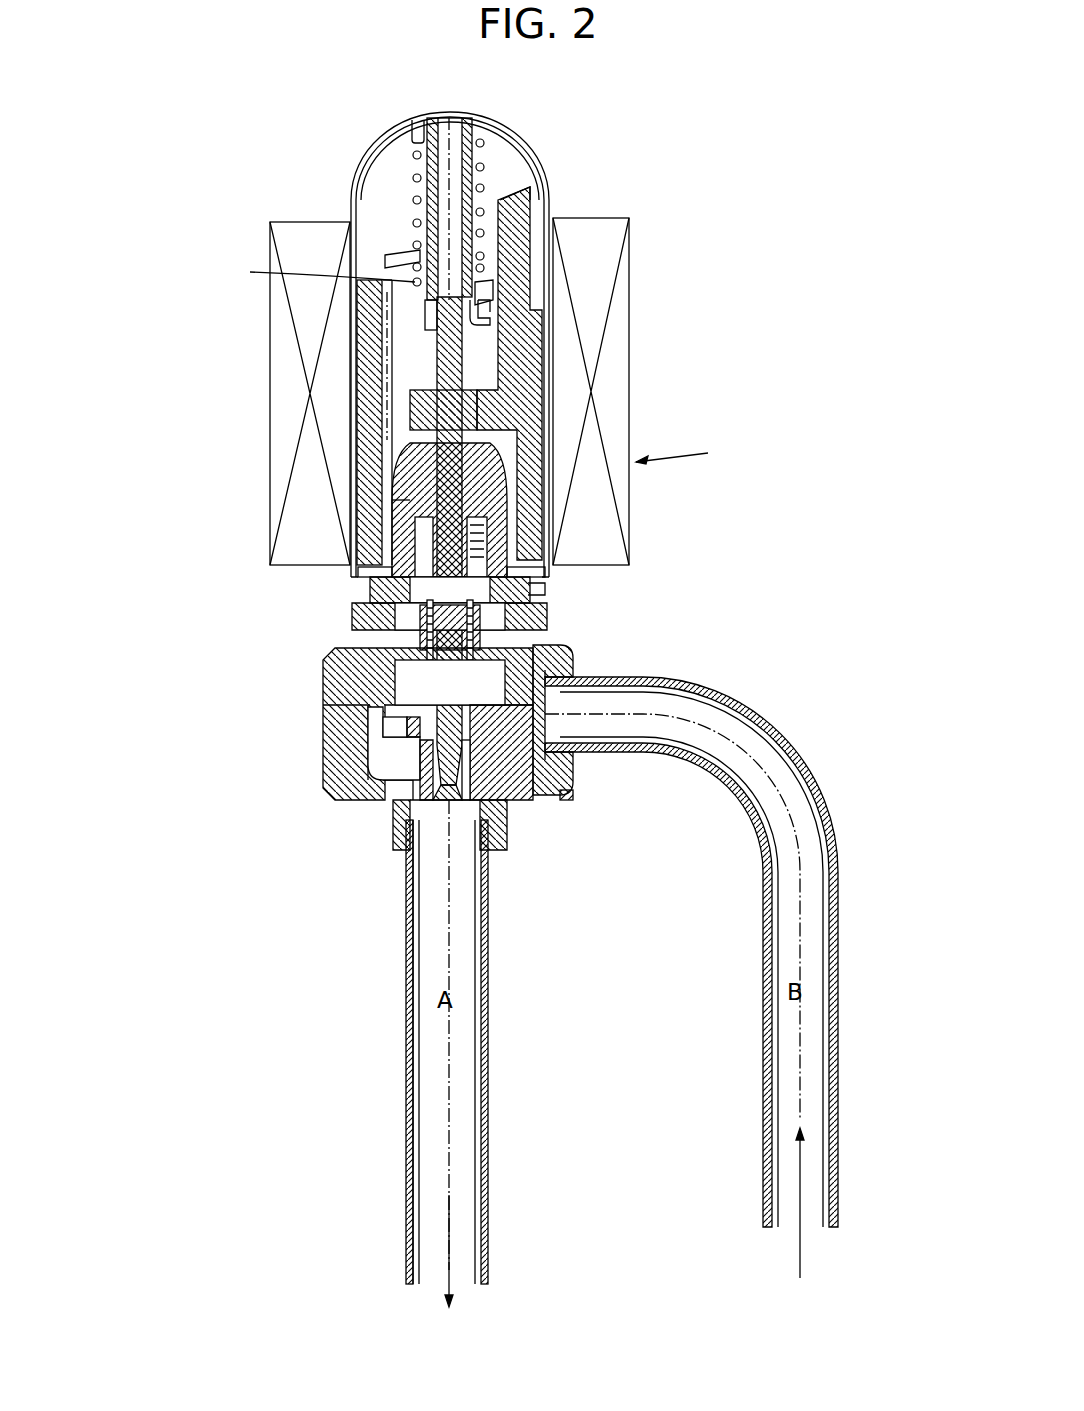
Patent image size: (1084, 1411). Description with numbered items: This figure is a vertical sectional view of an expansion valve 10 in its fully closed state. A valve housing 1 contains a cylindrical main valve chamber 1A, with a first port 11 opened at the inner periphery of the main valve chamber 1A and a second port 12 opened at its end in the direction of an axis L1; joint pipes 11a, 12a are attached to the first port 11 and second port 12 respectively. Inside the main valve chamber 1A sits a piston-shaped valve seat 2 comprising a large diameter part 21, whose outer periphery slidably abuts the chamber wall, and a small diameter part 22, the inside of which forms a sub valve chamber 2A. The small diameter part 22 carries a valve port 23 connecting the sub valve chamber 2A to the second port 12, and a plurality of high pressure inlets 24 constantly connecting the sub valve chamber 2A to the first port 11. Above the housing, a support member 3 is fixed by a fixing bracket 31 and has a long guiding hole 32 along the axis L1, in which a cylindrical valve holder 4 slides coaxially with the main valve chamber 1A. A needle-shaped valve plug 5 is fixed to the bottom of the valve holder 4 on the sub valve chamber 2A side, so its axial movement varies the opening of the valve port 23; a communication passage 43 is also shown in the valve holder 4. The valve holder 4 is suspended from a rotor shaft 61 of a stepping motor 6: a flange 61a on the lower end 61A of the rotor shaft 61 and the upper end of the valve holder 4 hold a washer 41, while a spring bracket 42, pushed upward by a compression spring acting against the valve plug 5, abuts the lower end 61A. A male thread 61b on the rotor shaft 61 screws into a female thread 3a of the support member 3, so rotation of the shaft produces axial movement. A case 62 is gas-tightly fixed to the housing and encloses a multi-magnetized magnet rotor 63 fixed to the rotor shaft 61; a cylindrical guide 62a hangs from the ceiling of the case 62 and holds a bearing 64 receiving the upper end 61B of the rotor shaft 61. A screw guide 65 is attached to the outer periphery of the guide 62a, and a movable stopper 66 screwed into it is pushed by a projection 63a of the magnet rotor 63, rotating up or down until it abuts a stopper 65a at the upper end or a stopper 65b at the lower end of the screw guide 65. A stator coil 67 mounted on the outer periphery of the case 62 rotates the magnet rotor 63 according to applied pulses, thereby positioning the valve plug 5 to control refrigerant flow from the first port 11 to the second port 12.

The valve housing 1 is at (323, 690).
The main valve chamber 1A is at (373, 745).
The valve seat 2 is at (537, 700).
The sub valve chamber 2A is at (367, 710).
The support member 3 is at (500, 567).
The female thread 3a is at (450, 487).
The valve holder 4 is at (543, 610).
The valve plug 5 is at (517, 795).
The stepping motor 6 is at (681, 453).
The expansion valve 10 is at (681, 156).
The first port 11 is at (535, 717).
The joint pipe 11a is at (693, 683).
The second port 12 is at (507, 828).
The joint pipe 12a is at (465, 943).
The large diameter part 21 is at (380, 673).
The small diameter part 22 is at (387, 757).
The valve port 23 is at (433, 790).
The high pressure inlets 24 is at (393, 730).
The fixing bracket 31 is at (535, 588).
The guiding hole 32 is at (487, 548).
The washer 41 is at (397, 565).
The spring bracket 42 is at (543, 627).
The communication passage 43 is at (410, 638).
The rotor shaft 61 is at (500, 352).
The lower end 61A is at (360, 605).
The flange 61a is at (417, 587).
The male thread 61b is at (410, 547).
The upper end 61B is at (437, 234).
The case 62 is at (550, 440).
The guide 62a is at (423, 320).
The magnet rotor 63 is at (367, 405).
The projection 63a is at (548, 230).
The bearing 64 is at (432, 215).
The screw guide 65 is at (413, 178).
The stopper 65a is at (410, 138).
The stopper 65b is at (490, 312).
The movable stopper 66 is at (385, 262).
The stator coil 67 is at (627, 388).
The axis L1 is at (440, 857).